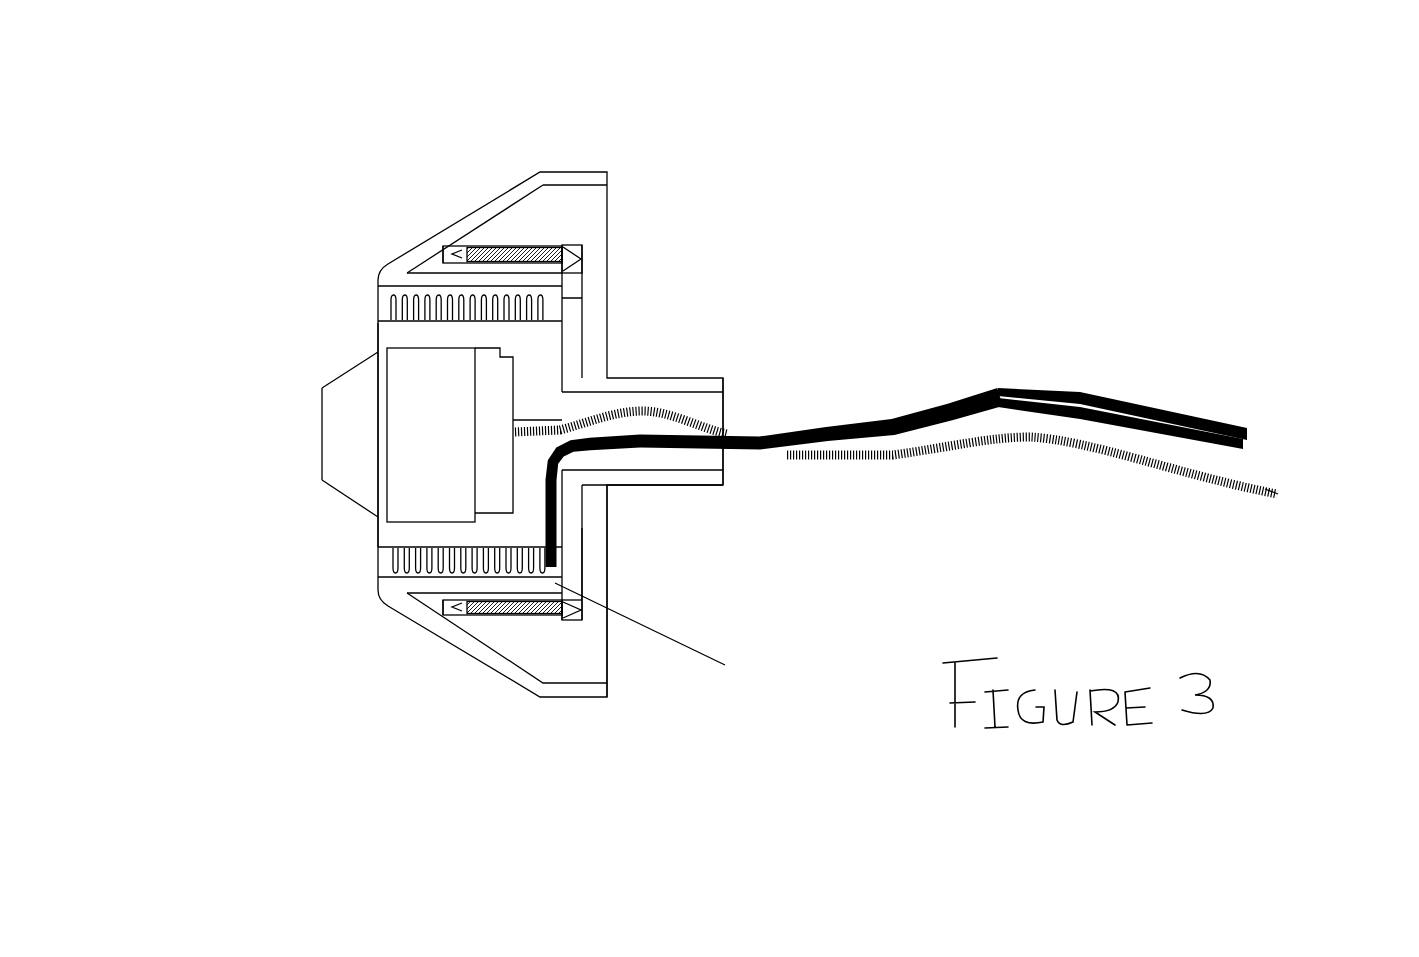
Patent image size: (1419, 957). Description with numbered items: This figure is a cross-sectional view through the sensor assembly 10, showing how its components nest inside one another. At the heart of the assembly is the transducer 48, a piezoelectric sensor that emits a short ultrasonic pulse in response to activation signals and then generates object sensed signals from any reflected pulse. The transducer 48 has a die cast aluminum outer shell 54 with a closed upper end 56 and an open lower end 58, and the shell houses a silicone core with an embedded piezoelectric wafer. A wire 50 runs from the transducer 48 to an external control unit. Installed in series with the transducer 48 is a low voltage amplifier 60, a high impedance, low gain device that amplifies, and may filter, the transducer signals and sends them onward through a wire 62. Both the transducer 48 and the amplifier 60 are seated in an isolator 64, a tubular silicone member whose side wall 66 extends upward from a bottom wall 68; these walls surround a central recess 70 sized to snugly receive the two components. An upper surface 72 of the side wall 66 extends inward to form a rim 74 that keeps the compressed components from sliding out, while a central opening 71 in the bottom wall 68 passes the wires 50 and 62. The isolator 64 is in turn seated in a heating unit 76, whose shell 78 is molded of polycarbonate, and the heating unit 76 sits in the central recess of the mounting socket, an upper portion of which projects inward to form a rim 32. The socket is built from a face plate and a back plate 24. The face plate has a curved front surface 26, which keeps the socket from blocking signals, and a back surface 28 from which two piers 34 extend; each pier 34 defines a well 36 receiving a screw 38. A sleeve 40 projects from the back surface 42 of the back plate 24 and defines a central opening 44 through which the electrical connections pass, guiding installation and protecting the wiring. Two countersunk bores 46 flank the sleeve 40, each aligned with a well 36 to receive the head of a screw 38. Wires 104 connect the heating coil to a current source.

The sensor assembly 10 is at (353, 205).
The back plate 24 is at (578, 308).
The front surface 26 is at (513, 188).
The back surface 28 is at (508, 655).
The rim 32 is at (375, 580).
The pier 34 is at (527, 247).
The well 36 is at (437, 612).
The screw 38 is at (475, 610).
The sleeve 40 is at (657, 478).
The back surface 42 is at (578, 528).
The central opening 44 is at (708, 403).
The bore 46 is at (587, 250).
The transducer 48 is at (320, 463).
The wire 50 is at (1270, 485).
The outer shell 54 is at (315, 400).
The closed upper end 56 is at (320, 450).
The open lower end 58 is at (585, 290).
The amplifier 60 is at (497, 362).
The wire 62 is at (1250, 493).
The isolator 64 is at (375, 545).
The side wall 66 is at (375, 327).
The bottom wall 68 is at (550, 362).
The central recess 70 is at (560, 547).
The central opening 71 is at (565, 473).
The upper surface 72 is at (375, 340).
The rim 74 is at (375, 518).
The heating unit 76 is at (425, 295).
The shell 78 is at (375, 302).
The wires 104 is at (1240, 427).